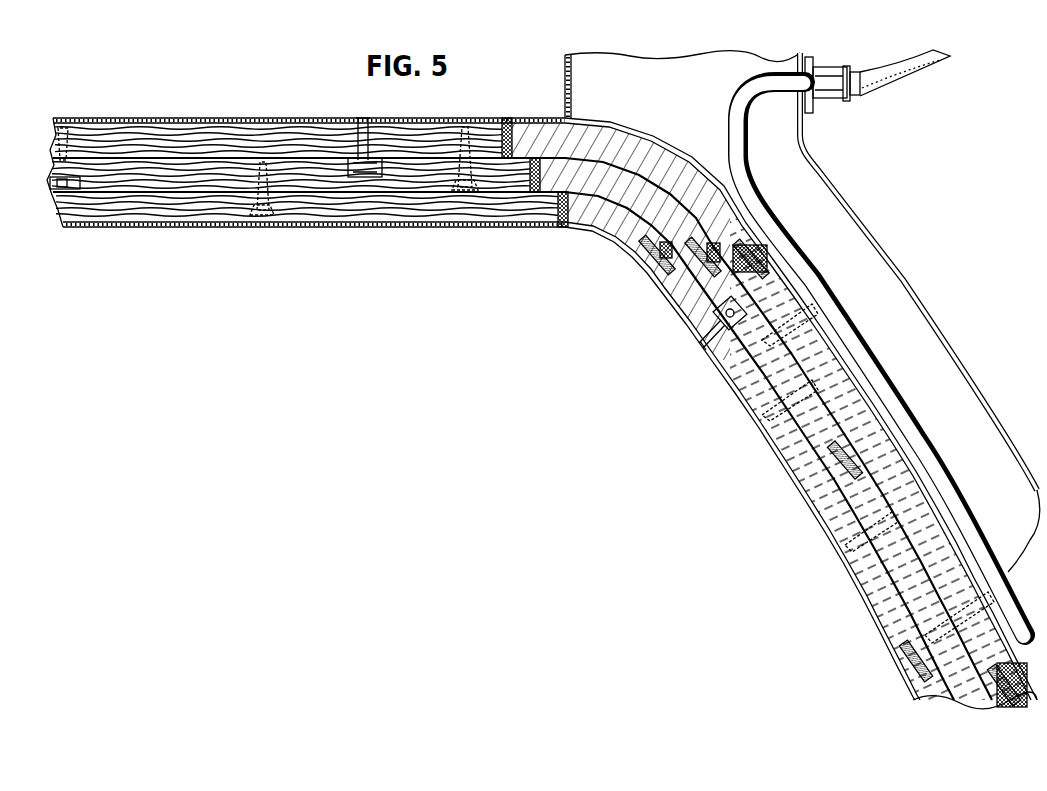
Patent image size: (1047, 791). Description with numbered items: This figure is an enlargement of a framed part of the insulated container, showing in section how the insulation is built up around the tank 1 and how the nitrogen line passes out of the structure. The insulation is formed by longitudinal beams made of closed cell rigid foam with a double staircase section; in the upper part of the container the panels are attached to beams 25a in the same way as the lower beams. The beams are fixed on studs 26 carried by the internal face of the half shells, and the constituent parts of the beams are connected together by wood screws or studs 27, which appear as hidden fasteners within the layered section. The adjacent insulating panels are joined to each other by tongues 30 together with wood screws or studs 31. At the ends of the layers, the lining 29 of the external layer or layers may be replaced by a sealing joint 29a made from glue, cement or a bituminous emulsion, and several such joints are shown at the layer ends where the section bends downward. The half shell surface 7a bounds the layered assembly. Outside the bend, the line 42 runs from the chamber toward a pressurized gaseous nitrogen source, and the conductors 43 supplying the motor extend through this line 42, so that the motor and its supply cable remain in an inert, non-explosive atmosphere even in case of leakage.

The tank 1 is at (438, 228).
The outer skin layer 7a is at (138, 119).
The beams 25a is at (150, 208).
The studs 26 is at (355, 121).
The wood screws or studs 27 is at (262, 162).
The lining 29 is at (558, 228).
The sealing joint 29a is at (508, 150).
The tongues 30 is at (690, 263).
The wood screws or studs 31 is at (765, 416).
The line 42 is at (566, 80).
The conductors 43 is at (892, 381).